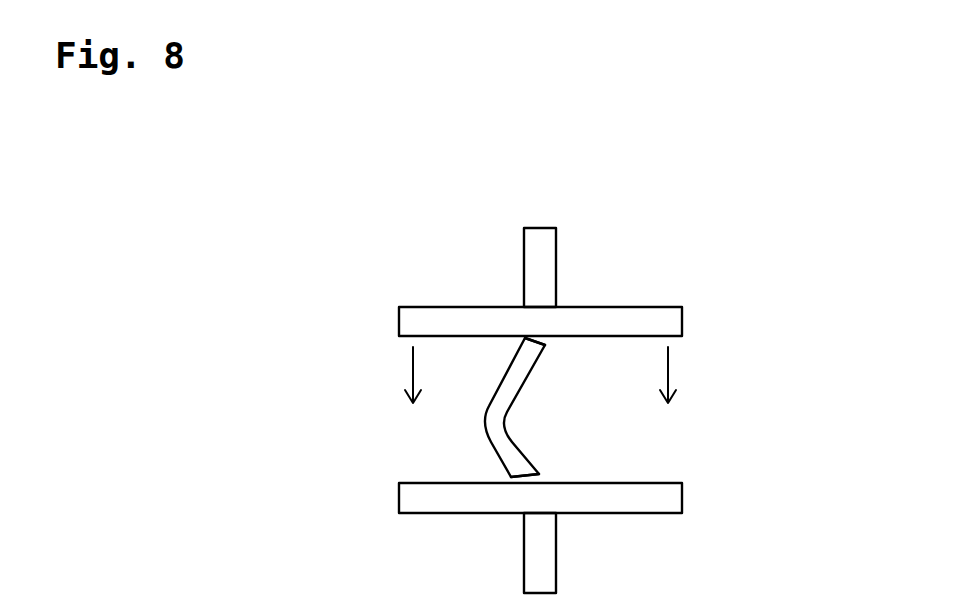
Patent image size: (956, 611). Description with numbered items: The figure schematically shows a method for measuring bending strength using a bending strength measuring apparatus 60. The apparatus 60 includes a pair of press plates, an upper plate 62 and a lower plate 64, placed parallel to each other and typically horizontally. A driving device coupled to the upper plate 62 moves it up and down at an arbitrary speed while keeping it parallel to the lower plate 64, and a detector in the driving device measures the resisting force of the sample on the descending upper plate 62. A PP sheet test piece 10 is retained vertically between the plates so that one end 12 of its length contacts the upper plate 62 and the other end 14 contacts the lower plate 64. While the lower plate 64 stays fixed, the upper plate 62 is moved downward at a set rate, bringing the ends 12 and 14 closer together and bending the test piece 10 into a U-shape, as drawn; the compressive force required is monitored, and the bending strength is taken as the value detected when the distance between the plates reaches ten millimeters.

The PP sheet (test piece) 10 is at (525, 378).
The one end 12 is at (514, 347).
The other end 14 is at (512, 476).
The bending strength measuring apparatus 60 is at (738, 253).
The upper plate 62 is at (681, 324).
The lower plate 64 is at (681, 497).